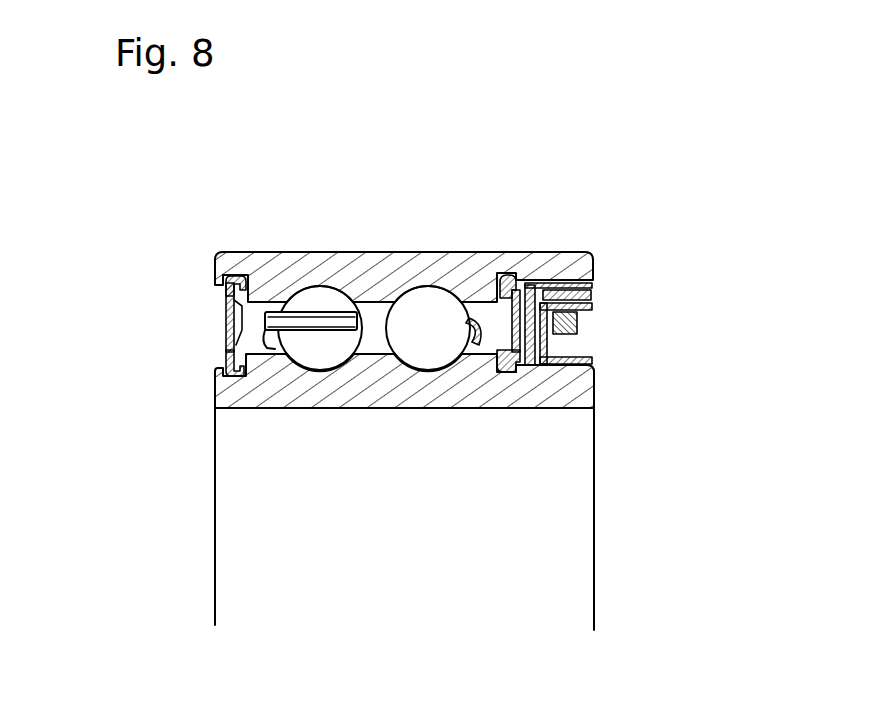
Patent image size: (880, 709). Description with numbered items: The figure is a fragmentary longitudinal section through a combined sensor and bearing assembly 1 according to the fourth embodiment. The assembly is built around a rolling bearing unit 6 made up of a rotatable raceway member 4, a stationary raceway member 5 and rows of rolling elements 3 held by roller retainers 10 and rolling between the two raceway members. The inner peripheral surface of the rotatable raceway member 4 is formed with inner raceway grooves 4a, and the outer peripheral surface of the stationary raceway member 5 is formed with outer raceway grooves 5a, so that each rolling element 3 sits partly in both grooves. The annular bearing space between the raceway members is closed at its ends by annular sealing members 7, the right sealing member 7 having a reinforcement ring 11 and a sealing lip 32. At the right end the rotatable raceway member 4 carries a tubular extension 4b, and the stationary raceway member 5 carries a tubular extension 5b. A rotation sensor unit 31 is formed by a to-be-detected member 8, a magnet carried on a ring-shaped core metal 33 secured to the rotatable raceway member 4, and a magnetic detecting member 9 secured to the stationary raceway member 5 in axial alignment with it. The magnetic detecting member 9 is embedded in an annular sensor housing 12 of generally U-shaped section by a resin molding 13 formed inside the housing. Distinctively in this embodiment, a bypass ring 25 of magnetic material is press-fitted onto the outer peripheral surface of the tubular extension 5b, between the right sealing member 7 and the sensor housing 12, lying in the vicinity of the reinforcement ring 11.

The combined sensor and bearing assembly 1 is at (185, 189).
The rolling elements 3 is at (320, 297).
The rotatable raceway member 4 is at (250, 257).
The inner raceway grooves 4a is at (304, 291).
The tubular extension 4b is at (578, 266).
The stationary raceway member 5 is at (247, 396).
The outer raceway grooves 5a is at (313, 362).
The tubular extension 5b is at (583, 388).
The rolling bearing unit 6 is at (482, 118).
The annular sealing members 7 is at (223, 313).
The to-be-detected member 8 is at (590, 288).
The magnetic detecting member 9 is at (590, 316).
The roller retainers 10 is at (242, 330).
The reinforcement ring 11 is at (505, 280).
The sensor housing 12 is at (560, 352).
The resin molding 13 is at (577, 338).
The bypass ring 25 is at (578, 363).
The rotation sensor unit 31 is at (703, 253).
The seal lip 32 is at (502, 360).
The core metal 33 is at (517, 292).